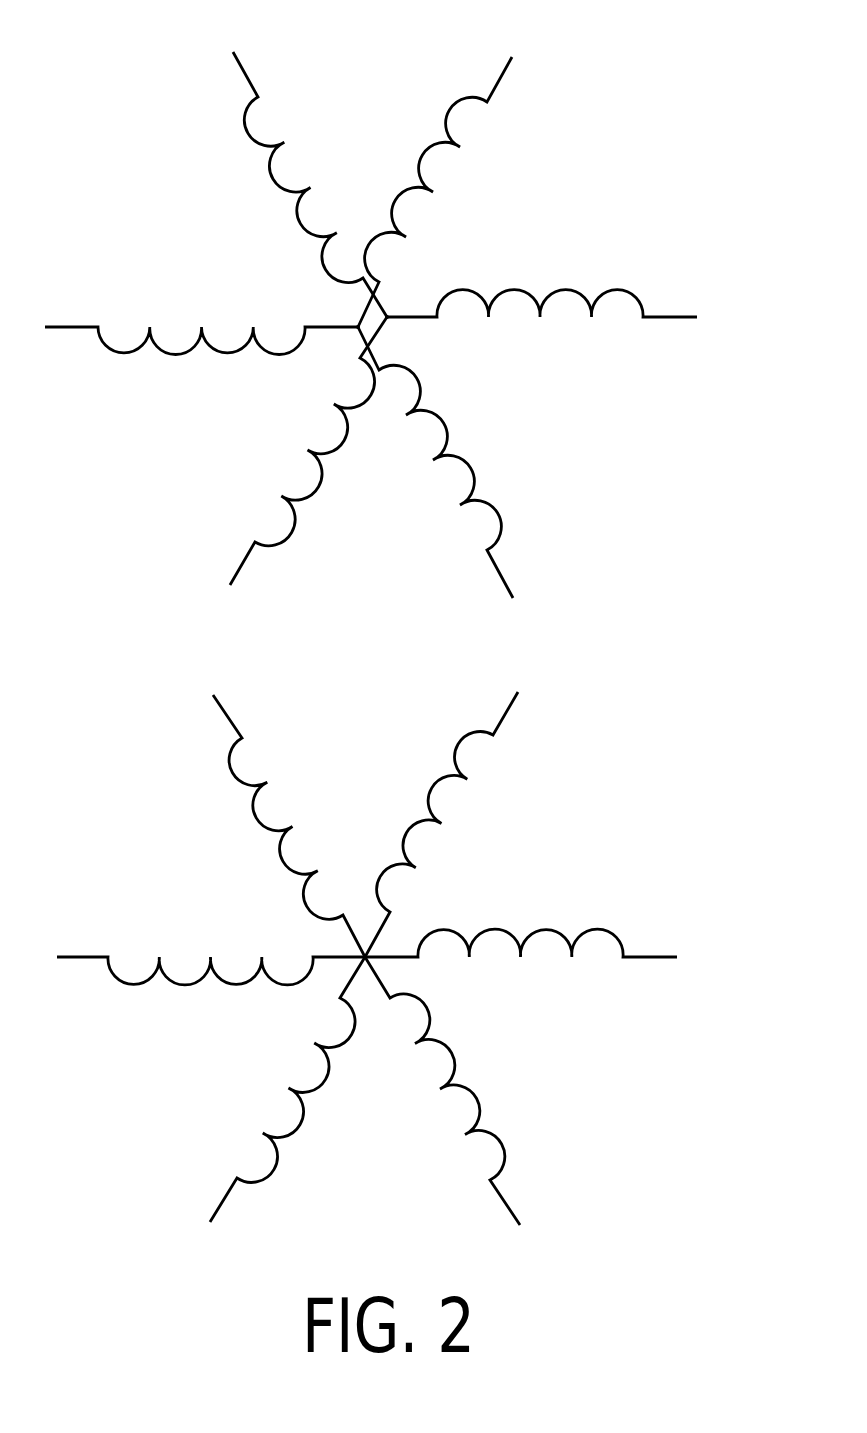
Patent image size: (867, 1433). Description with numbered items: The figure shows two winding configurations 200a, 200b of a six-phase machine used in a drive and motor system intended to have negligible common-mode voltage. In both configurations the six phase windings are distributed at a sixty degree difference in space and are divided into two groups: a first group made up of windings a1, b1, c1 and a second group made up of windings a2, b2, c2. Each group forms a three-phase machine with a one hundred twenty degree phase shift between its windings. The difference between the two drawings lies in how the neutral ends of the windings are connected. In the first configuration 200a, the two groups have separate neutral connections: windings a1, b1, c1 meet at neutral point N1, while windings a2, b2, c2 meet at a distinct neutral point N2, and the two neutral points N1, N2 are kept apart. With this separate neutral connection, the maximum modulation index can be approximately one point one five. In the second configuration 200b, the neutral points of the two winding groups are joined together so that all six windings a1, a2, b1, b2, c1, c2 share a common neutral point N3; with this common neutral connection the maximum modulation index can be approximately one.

The phase winding a1 is at (546, 615).
The phase winding a2 is at (205, 629).
The phase winding b1 is at (300, 484).
The phase winding b2 is at (470, 776).
The phase winding c1 is at (272, 781).
The phase winding c2 is at (465, 497).
The neutral point N1 is at (402, 326).
The neutral point N2 is at (341, 338).
The neutral point N3 is at (349, 970).
The first winding configuration 200a is at (423, 600).
The second winding configuration 200b is at (423, 1230).